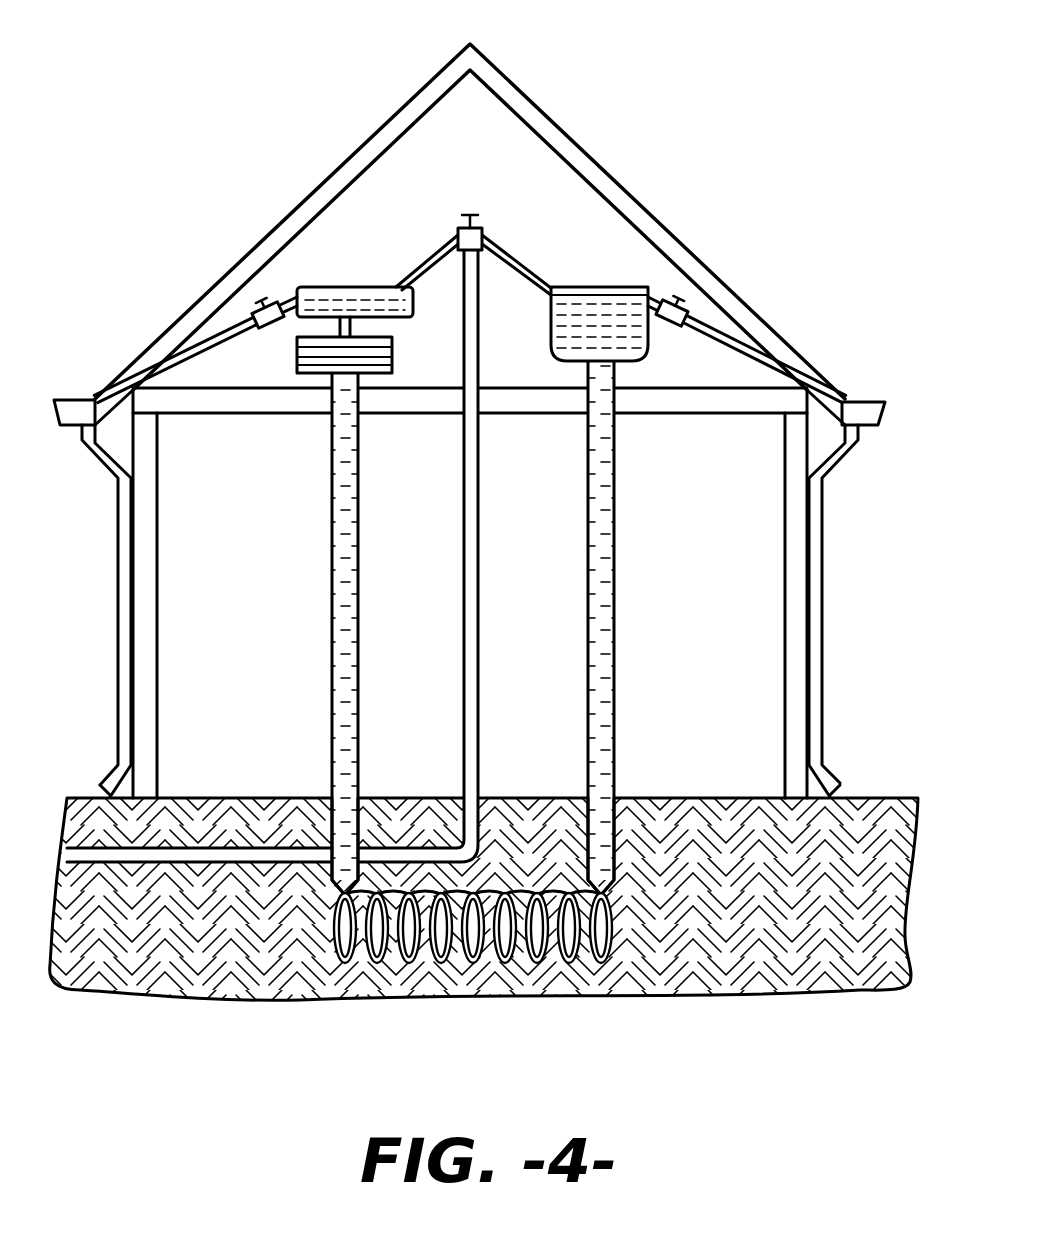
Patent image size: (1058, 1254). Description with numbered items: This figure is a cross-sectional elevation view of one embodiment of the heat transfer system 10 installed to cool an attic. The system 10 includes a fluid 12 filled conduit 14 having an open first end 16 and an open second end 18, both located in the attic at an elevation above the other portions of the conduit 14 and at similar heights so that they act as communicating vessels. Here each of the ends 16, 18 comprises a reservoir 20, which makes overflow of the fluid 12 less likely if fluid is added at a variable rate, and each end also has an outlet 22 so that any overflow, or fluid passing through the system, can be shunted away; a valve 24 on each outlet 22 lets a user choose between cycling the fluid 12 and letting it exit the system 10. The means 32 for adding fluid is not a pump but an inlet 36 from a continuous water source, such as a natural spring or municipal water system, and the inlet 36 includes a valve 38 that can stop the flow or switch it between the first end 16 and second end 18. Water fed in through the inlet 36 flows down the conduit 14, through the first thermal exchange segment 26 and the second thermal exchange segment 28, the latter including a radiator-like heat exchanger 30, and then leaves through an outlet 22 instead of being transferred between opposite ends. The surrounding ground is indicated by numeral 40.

The heat transfer system 10 is at (638, 100).
The fluid 12 is at (350, 472).
The conduit 14 is at (328, 684).
The first end 16 is at (612, 287).
The second end 18 is at (346, 287).
The reservoir 20 is at (320, 287).
The outlet 22 is at (213, 330).
The valve 24 is at (248, 298).
The first thermal exchange segment 26 is at (562, 966).
The second thermal exchange segment 28 is at (332, 351).
The heat exchanger 30 is at (392, 362).
The means for adding fluid 32 is at (491, 230).
The inlet 36 is at (432, 252).
The valve 38 is at (466, 222).
The ground 40 is at (852, 827).